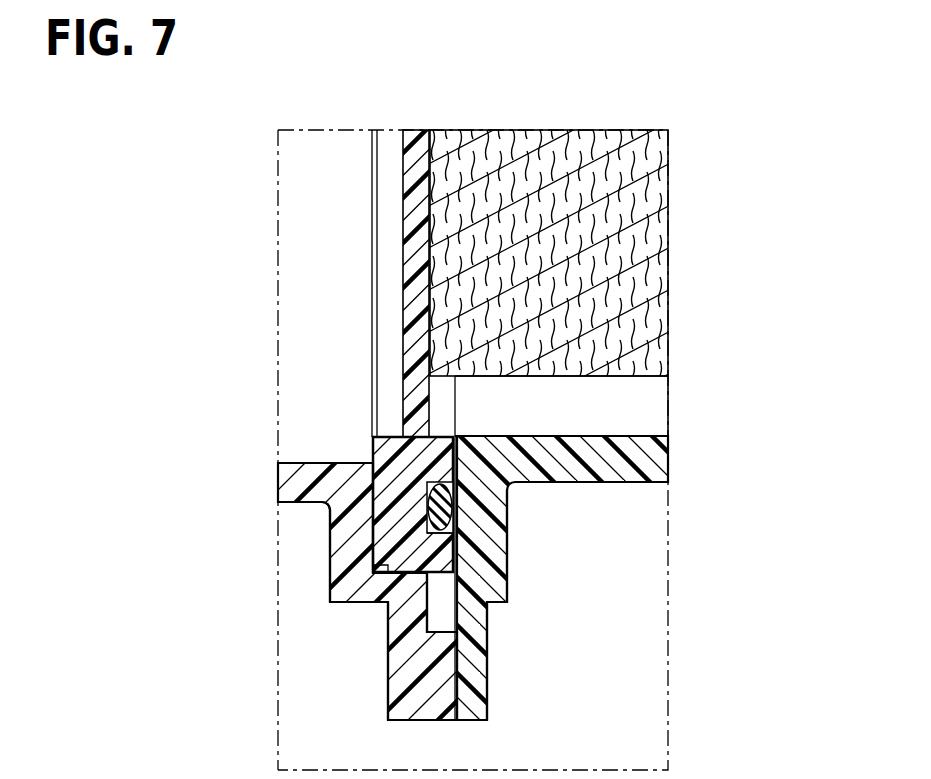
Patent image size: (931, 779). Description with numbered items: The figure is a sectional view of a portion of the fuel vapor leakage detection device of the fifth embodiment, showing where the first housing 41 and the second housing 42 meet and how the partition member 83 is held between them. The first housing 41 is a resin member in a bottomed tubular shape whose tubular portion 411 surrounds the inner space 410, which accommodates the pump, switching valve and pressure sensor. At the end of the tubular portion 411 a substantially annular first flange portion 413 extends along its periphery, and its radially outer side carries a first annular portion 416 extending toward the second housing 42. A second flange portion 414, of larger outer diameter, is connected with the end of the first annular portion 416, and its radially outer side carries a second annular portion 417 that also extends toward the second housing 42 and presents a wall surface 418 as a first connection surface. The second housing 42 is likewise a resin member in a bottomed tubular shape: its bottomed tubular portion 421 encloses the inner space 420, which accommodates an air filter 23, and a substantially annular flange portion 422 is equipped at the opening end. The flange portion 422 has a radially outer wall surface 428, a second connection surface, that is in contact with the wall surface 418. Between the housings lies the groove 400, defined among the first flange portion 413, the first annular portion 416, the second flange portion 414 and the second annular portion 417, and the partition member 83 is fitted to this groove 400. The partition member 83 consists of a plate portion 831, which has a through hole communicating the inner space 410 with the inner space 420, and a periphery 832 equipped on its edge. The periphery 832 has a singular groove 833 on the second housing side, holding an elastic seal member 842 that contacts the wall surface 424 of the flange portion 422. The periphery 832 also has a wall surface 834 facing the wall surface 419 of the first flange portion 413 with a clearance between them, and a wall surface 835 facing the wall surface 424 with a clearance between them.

The air filter 23 is at (640, 190).
The first housing 41 is at (376, 563).
The second housing 42 is at (606, 541).
The partition member 83 is at (395, 322).
The groove 400 is at (385, 578).
The inner space 410 is at (290, 338).
The tubular portion 411 is at (287, 470).
The first flange portion 413 is at (340, 572).
The second flange portion 414 is at (413, 612).
The first annular portion 416 is at (372, 605).
The second annular portion 417 is at (433, 683).
The wall surface 418 is at (460, 705).
The wall surface 419 is at (370, 550).
The inner space 420 is at (618, 418).
The bottomed tubular portion 421 is at (650, 452).
The flange portion 422 is at (490, 590).
The wall surface 424 is at (445, 585).
The wall surface 428 is at (445, 657).
The plate portion 831 is at (406, 243).
The periphery 832 is at (375, 440).
The groove 833 is at (455, 492).
The wall surface 834 is at (378, 540).
The wall surface 835 is at (462, 533).
The seal member 842 is at (450, 512).